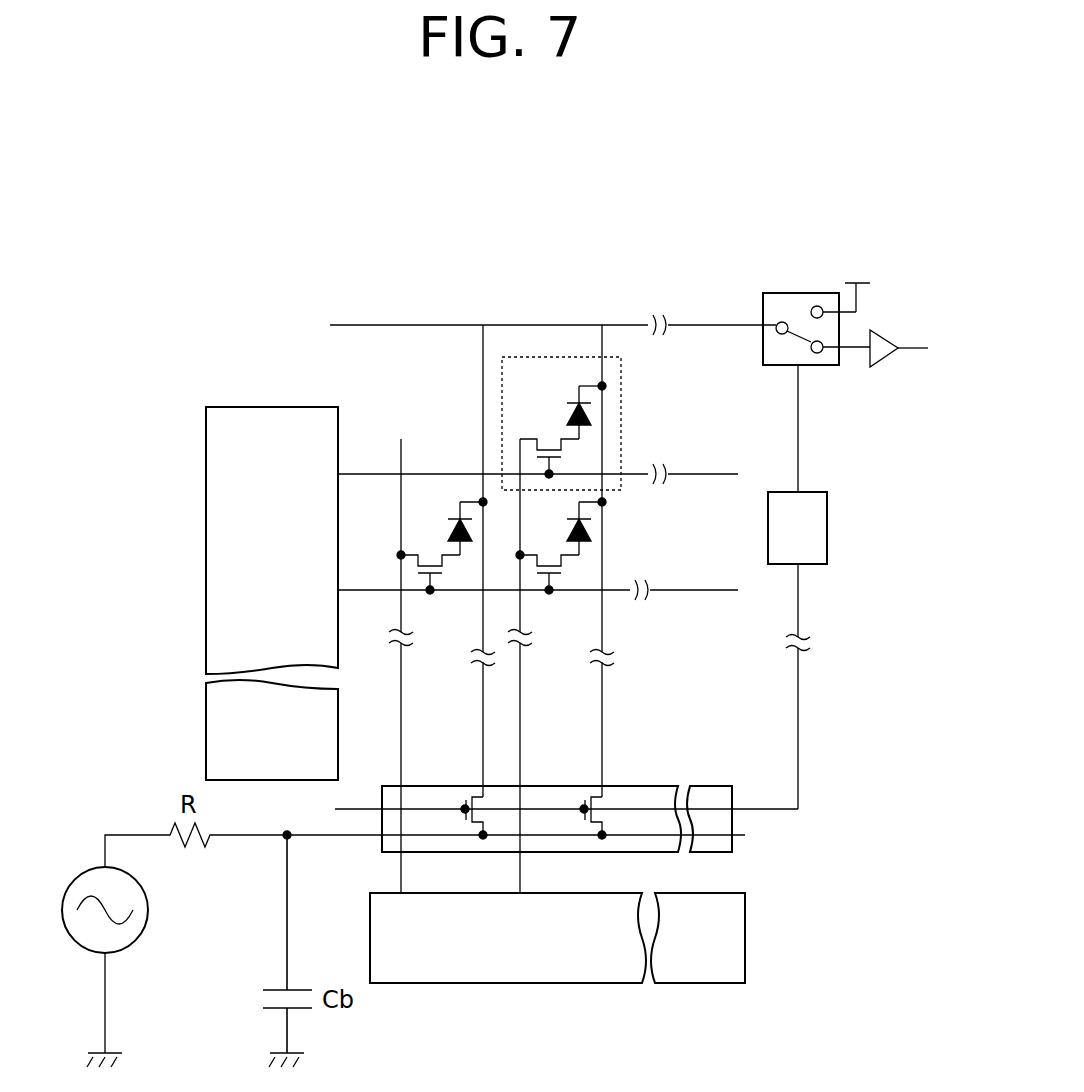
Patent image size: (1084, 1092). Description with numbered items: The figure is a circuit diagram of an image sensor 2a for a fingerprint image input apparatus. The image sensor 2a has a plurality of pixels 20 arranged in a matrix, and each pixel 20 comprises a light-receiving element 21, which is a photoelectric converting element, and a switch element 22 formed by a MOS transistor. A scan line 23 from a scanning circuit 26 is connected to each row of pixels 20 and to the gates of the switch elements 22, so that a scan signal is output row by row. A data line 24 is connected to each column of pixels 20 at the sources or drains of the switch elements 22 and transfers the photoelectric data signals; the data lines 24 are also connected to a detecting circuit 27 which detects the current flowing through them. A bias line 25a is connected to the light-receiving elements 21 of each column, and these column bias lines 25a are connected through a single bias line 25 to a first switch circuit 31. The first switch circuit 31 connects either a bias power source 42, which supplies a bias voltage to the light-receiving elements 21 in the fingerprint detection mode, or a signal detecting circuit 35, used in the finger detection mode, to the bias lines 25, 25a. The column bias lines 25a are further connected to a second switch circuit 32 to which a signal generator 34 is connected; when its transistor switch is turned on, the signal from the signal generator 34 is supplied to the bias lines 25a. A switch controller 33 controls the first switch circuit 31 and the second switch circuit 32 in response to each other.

The image sensor 2a is at (595, 248).
The pixel 20 is at (594, 379).
The light-receiving element 21 is at (586, 410).
The switch element 22 is at (549, 437).
The scan line 23 is at (367, 588).
The data line 24 is at (402, 715).
The bias line 25 is at (357, 325).
The bias line 25a is at (487, 607).
The scanning circuit 26 is at (265, 406).
The detecting circuit 27 is at (745, 923).
The first switch circuit 31 is at (780, 292).
The second switch circuit 32 is at (732, 850).
The switch controller 33 is at (828, 517).
The signal generator 34 is at (148, 915).
The signal detecting circuit 35 is at (878, 366).
The bias power source 42 is at (860, 283).